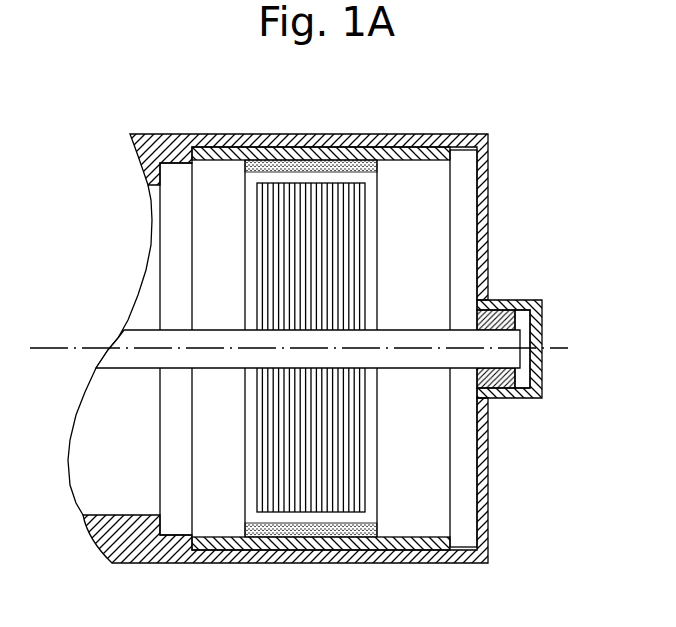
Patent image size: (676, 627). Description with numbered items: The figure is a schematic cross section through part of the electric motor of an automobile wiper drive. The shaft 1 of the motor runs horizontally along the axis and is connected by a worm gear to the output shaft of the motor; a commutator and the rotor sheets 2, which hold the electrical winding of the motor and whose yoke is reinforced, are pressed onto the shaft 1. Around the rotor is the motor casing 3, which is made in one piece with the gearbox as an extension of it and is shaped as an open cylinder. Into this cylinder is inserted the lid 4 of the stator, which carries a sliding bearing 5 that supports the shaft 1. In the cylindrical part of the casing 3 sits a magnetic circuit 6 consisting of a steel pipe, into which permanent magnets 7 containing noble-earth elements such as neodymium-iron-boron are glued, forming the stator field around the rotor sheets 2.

The shaft 1 is at (396, 338).
The rotor sheets 2 is at (352, 205).
The motor casing 3 is at (162, 133).
The lid of the stator 4 is at (488, 519).
The sliding bearing 5 is at (504, 300).
The magnetic circuit 6 is at (240, 163).
The permanent magnets 7 is at (250, 166).